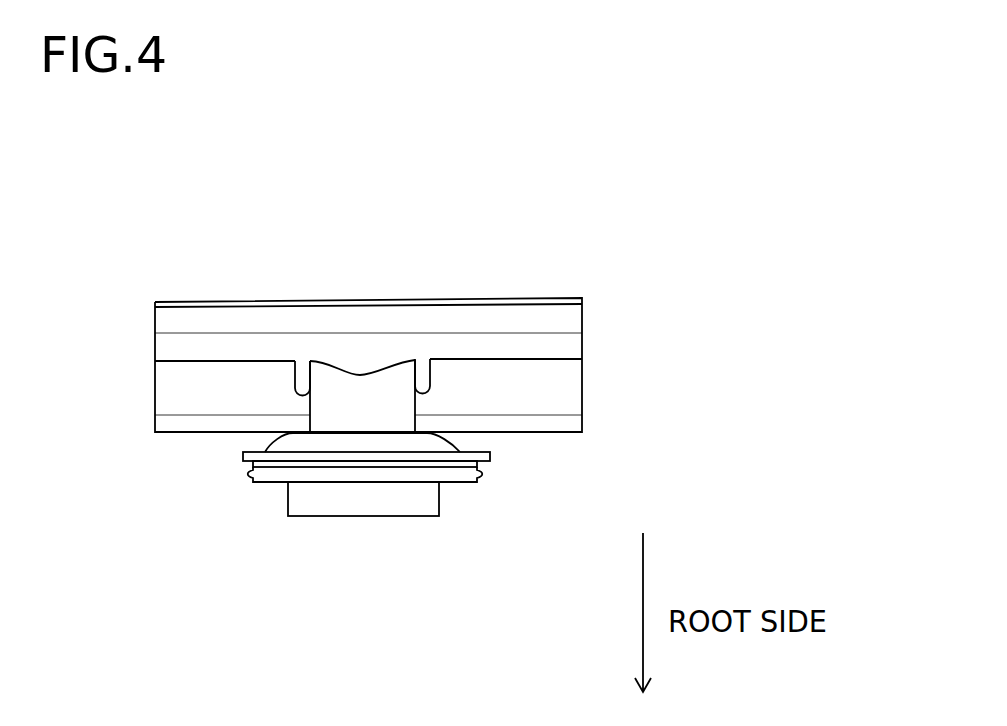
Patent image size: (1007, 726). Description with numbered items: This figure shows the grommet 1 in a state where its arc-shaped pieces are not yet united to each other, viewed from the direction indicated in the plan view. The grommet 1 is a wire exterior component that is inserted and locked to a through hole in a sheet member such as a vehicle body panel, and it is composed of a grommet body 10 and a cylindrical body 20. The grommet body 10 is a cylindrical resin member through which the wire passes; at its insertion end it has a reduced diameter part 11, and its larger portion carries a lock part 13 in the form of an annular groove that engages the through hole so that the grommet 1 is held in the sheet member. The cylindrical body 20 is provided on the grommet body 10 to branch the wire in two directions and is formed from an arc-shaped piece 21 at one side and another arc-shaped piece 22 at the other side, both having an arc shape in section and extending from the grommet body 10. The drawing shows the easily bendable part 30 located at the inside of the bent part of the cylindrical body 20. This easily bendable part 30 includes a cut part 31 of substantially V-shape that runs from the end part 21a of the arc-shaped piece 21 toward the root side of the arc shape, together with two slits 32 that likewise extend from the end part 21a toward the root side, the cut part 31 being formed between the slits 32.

The grommet 1 is at (381, 367).
The grommet body 10 is at (386, 534).
The reduced diameter part 11 is at (295, 504).
The lock part 13 is at (490, 463).
The cylindrical body 20 is at (368, 272).
The arc-shaped piece 21 is at (192, 412).
The end part 21a is at (190, 361).
The arc-shaped piece 22 is at (290, 300).
The easily bendable part 30 is at (368, 304).
The cut part 31 is at (397, 362).
The slits 32 is at (401, 393).